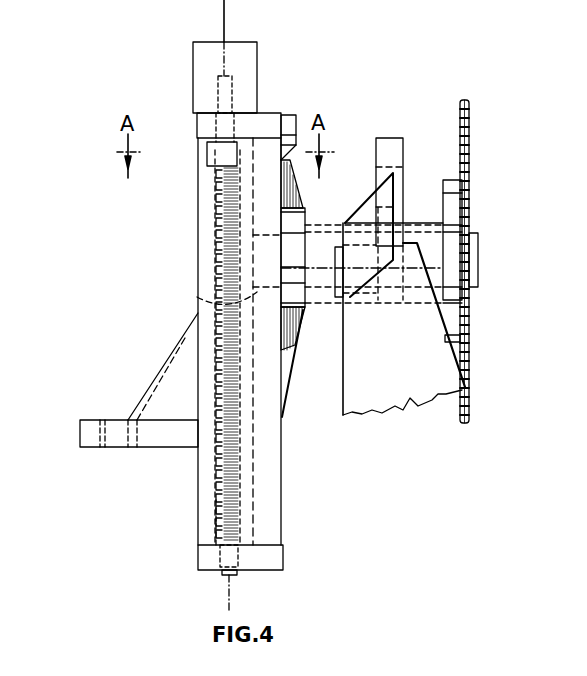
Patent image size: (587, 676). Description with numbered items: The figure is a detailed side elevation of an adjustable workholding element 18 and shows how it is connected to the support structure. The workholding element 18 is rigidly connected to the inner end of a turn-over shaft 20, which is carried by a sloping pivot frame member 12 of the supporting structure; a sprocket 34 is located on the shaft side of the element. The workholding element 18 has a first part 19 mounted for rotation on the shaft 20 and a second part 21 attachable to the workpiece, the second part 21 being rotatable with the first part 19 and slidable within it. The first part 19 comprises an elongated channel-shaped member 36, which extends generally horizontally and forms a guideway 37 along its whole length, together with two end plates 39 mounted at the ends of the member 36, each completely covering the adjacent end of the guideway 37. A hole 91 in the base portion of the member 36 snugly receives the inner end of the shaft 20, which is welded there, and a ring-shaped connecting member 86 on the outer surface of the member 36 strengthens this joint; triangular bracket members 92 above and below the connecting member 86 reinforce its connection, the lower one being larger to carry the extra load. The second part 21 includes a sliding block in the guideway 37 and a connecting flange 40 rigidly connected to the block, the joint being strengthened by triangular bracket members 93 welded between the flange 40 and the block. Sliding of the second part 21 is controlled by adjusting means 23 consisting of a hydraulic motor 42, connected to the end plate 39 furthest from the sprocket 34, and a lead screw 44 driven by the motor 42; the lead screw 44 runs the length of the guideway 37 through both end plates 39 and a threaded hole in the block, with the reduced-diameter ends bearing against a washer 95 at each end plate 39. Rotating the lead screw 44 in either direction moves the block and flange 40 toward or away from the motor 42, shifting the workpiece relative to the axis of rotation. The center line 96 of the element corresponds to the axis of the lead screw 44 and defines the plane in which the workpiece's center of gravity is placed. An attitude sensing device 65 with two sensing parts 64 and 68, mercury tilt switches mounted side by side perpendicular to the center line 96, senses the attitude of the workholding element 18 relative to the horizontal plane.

The pivot frame member 12 is at (428, 382).
The workholding element 18 is at (136, 86).
The first part 19 is at (292, 176).
The turn-over shaft 20 is at (480, 253).
The second part 21 is at (176, 354).
The adjusting means 23 is at (214, 244).
The sprocket 34 is at (471, 134).
The channel-shaped member 36 is at (272, 529).
The guideway 37 is at (260, 483).
The end plate 39 is at (205, 117).
The connecting flange 40 is at (178, 445).
The motor 42 is at (248, 83).
The lead screw 44 is at (217, 499).
The sensing part 64 is at (283, 116).
The attitude sensing device 65 is at (291, 116).
The sensing part 68 is at (291, 148).
The ring-shaped connecting member 86 is at (297, 221).
The hole 91 is at (194, 299).
The bracket member 92 is at (307, 327).
The bracket member 93 is at (161, 392).
The washer 95 is at (198, 146).
The center line 96 is at (226, 24).